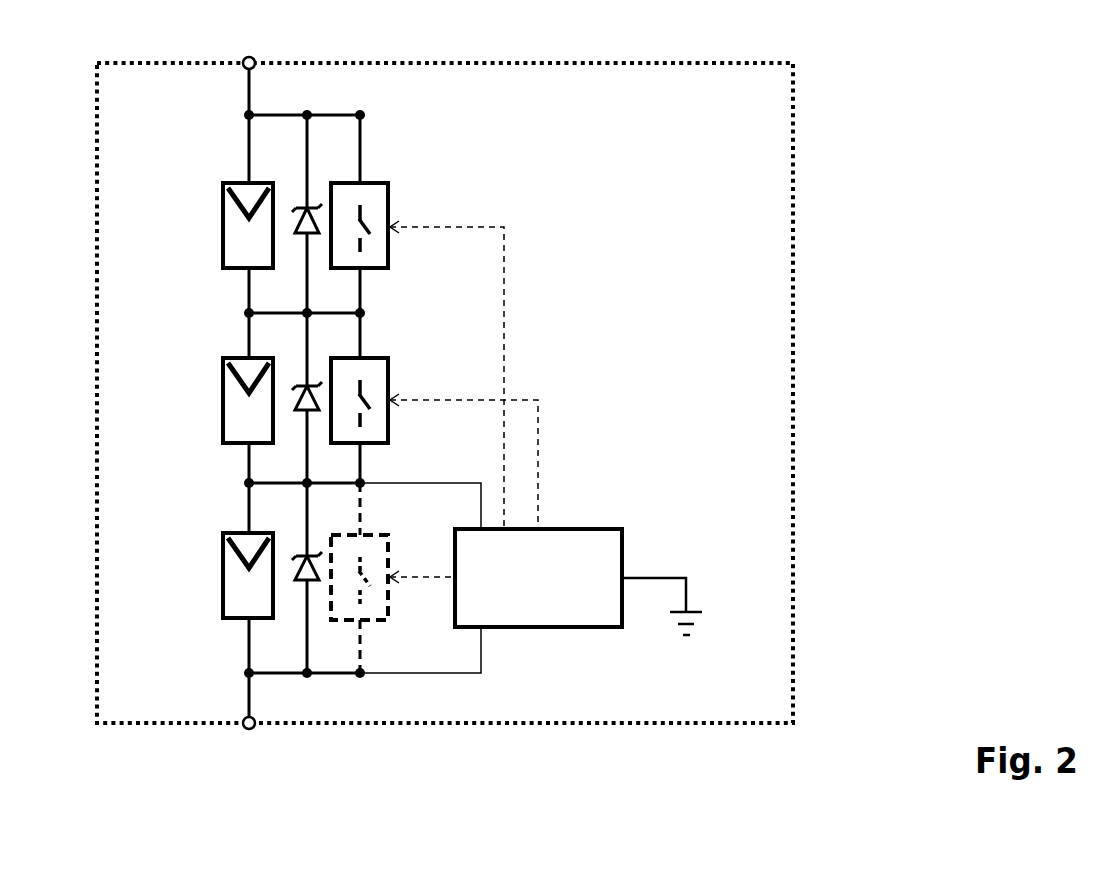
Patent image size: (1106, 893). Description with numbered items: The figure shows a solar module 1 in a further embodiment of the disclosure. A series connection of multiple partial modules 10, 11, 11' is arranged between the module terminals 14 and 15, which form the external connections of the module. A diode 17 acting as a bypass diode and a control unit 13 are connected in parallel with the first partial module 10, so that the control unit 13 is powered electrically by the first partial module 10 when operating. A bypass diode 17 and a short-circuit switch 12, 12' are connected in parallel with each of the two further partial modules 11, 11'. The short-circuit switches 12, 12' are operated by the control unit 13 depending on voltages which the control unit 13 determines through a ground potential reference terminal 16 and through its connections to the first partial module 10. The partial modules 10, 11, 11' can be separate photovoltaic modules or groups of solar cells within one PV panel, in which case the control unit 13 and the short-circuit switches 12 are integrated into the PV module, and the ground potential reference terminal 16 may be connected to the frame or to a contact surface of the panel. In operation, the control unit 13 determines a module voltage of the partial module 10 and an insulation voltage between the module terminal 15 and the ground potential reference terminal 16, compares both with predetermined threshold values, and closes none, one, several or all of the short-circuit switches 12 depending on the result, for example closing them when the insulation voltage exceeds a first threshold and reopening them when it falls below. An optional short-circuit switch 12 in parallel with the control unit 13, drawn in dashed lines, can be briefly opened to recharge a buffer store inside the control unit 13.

The solar module 1 is at (645, 63).
The first partial module 10 is at (223, 558).
The partial module 11 is at (216, 391).
The partial module 11' is at (216, 219).
The short-circuit switch 12 is at (434, 478).
The short-circuit switch 12' is at (417, 342).
The control unit 13 is at (623, 547).
The module terminal 14 is at (255, 57).
The module terminal 15 is at (254, 729).
The ground potential reference terminal 16 is at (689, 587).
The bypass diode 17 is at (309, 205).